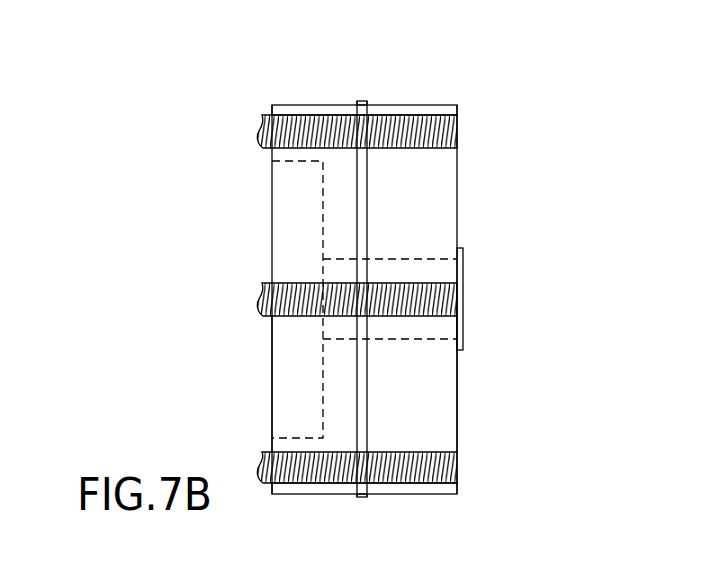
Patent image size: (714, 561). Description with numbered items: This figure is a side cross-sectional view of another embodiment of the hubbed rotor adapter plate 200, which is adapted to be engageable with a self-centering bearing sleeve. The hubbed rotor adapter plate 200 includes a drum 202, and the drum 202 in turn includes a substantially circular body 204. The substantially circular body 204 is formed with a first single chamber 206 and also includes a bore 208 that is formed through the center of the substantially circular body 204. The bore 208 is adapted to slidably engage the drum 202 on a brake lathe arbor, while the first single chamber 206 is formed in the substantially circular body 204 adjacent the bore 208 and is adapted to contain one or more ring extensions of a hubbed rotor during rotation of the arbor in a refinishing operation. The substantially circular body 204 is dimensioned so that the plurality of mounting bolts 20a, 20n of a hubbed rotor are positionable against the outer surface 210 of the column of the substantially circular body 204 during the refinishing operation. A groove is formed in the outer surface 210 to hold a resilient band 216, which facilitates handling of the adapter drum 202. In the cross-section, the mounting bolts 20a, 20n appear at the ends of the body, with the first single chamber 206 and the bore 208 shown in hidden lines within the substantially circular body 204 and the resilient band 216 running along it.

The hubbed rotor adapter plate 200 is at (170, 172).
The drum 202 is at (457, 177).
The substantially circular body 204 is at (428, 105).
The mounting bolt 20a is at (457, 128).
The mounting bolt 20n is at (457, 467).
The resilient band 216 is at (362, 101).
The first single chamber 206 is at (281, 194).
The bore 208 is at (445, 270).
The outer surface 210 is at (440, 393).